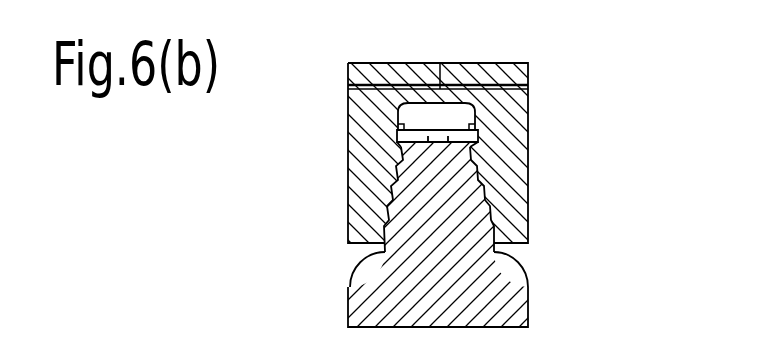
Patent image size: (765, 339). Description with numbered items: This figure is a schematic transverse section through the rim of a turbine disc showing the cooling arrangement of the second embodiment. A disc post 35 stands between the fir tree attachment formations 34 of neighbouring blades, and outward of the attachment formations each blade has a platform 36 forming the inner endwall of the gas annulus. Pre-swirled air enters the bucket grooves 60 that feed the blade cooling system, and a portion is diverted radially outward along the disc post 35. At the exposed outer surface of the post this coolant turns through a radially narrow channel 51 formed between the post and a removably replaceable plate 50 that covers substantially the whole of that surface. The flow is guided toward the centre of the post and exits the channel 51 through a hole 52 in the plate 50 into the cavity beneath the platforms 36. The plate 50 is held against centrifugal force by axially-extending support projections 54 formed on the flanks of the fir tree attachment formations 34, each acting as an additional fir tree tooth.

The fir tree attachment formations 34 is at (370, 182).
The disc posts 35 is at (445, 231).
The platform 36 is at (467, 70).
The removably replaceable plate 50 is at (452, 128).
The radially narrow channel 51 is at (490, 150).
The hole 52 is at (408, 148).
The axially-extending support projections 54 is at (400, 125).
The bucket grooves 60 is at (367, 265).